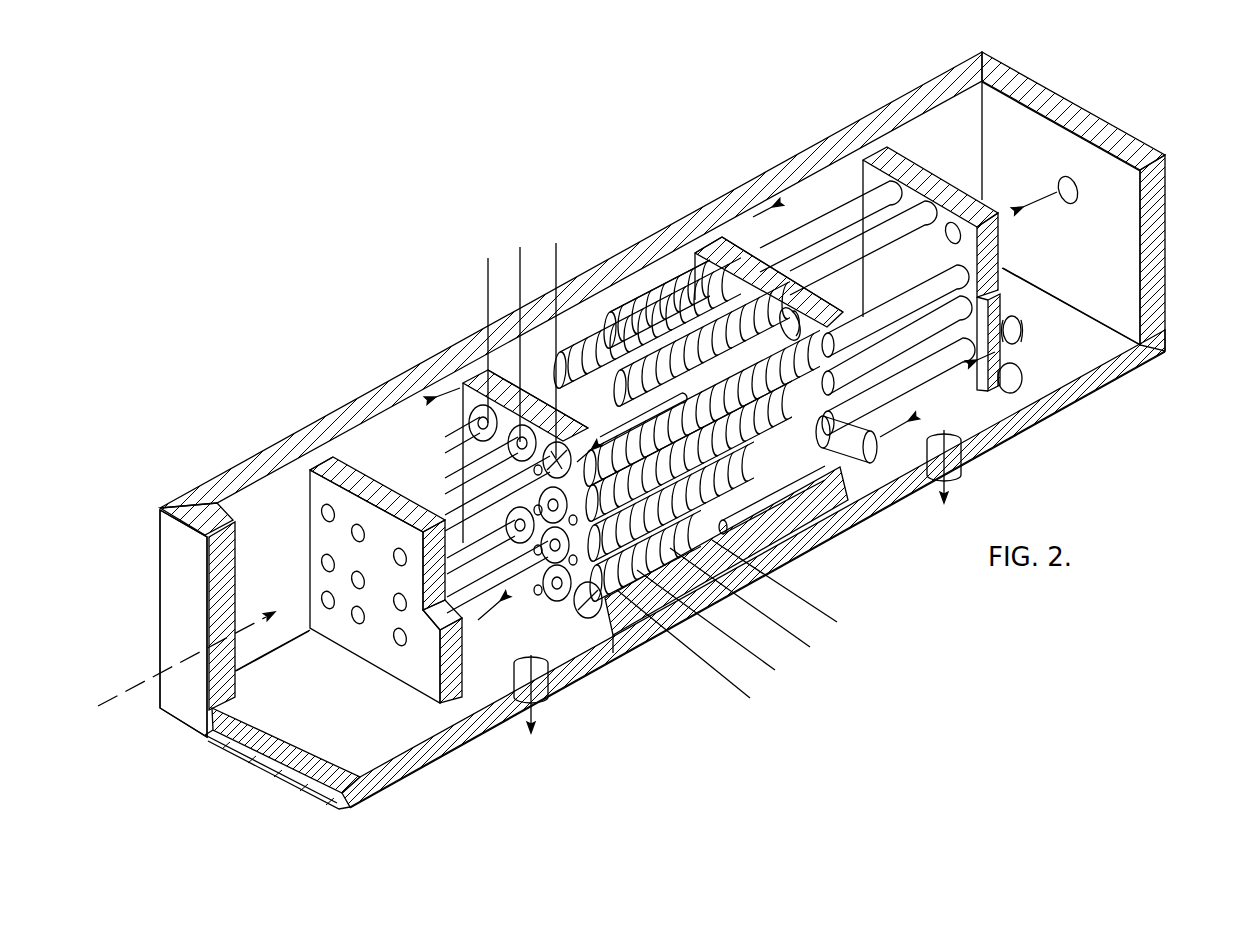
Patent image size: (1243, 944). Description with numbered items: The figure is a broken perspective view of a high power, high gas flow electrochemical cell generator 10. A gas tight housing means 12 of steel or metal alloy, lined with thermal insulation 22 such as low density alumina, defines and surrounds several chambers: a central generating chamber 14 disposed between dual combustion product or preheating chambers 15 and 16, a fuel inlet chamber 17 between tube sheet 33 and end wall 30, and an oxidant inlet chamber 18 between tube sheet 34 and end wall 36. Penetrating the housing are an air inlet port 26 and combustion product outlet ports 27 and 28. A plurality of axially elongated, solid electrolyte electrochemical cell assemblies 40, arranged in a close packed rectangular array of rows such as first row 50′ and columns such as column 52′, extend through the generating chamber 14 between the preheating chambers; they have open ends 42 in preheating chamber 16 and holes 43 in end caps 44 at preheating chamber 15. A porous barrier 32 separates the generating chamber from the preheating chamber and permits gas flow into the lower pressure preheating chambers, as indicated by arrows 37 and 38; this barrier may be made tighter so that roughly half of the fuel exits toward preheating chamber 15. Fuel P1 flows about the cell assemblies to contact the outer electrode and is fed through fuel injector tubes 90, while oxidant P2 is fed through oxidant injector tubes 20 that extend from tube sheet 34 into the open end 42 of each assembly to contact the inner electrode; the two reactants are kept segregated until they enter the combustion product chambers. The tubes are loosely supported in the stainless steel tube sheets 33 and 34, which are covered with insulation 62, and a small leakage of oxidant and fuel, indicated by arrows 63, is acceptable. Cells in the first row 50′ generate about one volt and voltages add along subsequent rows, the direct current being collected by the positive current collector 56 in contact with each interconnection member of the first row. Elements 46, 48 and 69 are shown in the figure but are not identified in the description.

The generator 10 is at (757, 580).
The gas tight housing means 12 is at (160, 600).
The central generating chamber 14 is at (642, 294).
The combustion product or preheating chamber 15 is at (410, 422).
The combustion product or preheating chamber 16 is at (797, 195).
The fuel inlet chamber or manifolding means 17 is at (272, 608).
The oxidant inlet chamber or manifolding means 18 is at (1043, 243).
The oxidant injector or feed tubes 20 is at (902, 262).
The thermal insulation 22 is at (231, 481).
The air inlet port 26 is at (1077, 200).
The combustion product outlet port 27 is at (545, 705).
The combustion product outlet port 28 is at (953, 472).
The end wall 30 is at (160, 541).
The porous barrier 32 is at (712, 242).
The tube sheet 33 is at (308, 473).
The tube sheet 34 is at (917, 168).
The end wall 36 is at (1124, 121).
The arrow 37 is at (500, 372).
The arrow 38 is at (684, 255).
The electrochemical cell assemblies 40 is at (640, 322).
The open ends 42 is at (780, 250).
The holes 43 is at (463, 428).
The end caps 44 is at (560, 597).
The collecting trough 46 is at (822, 486).
The pipe 48 is at (853, 485).
The first row 50′ is at (714, 684).
The column 52′ is at (488, 288).
The positive current collector 56 is at (613, 653).
The insulation 62 is at (1013, 381).
The arrows 63 is at (1023, 337).
The perforated plate 69 is at (435, 643).
The fuel injector or feed tubes 90 is at (540, 521).
The fuel P1 is at (172, 665).
The oxidant P2 is at (1152, 145).